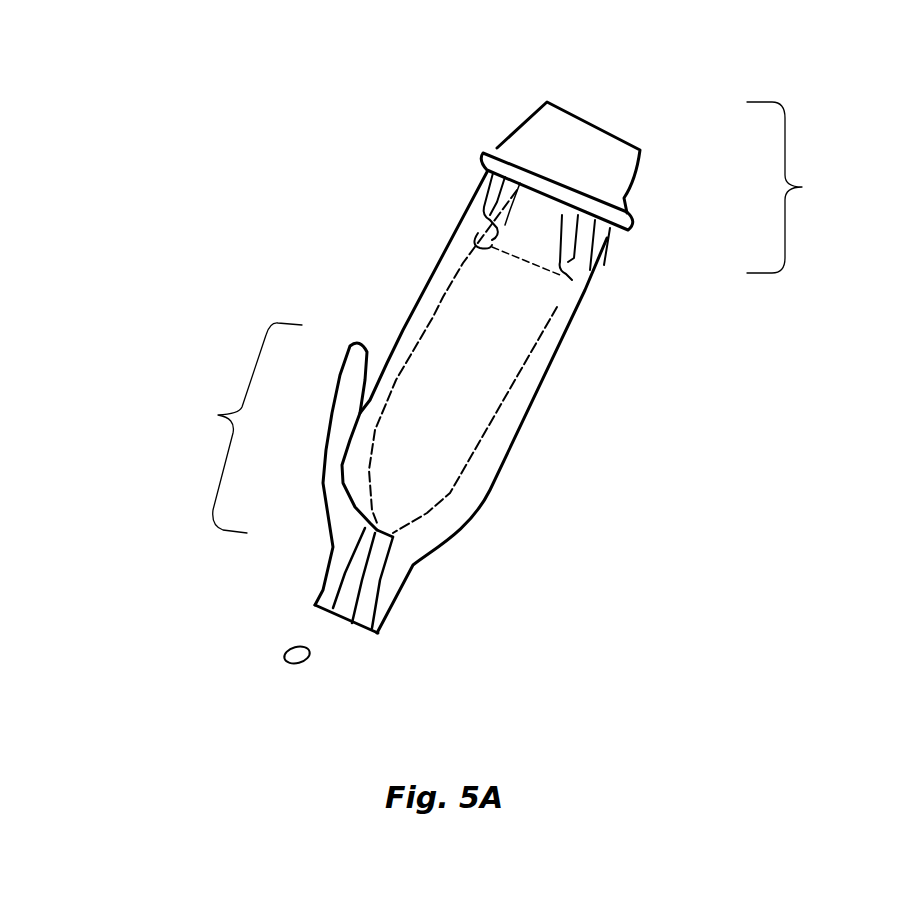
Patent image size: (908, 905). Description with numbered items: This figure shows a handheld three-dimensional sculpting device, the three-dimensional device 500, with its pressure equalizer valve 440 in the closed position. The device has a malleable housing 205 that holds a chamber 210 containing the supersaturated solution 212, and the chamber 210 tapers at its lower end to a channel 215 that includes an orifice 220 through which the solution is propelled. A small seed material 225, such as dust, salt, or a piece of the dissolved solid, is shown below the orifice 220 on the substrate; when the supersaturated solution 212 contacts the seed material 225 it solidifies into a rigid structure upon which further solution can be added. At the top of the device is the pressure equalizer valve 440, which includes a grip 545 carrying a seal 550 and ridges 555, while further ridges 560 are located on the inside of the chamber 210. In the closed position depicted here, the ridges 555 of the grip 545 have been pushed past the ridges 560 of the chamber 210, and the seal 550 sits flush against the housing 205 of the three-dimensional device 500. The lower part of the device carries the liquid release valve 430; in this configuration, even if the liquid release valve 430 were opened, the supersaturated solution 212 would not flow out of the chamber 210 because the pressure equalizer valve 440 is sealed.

The malleable housing 205 is at (503, 477).
The chamber 210 is at (418, 480).
The supersaturated solution 212 is at (463, 308).
The channel 215 is at (378, 565).
The orifice 220 is at (340, 622).
The seed material 225 is at (273, 652).
The liquid release valve 430 is at (219, 428).
The pressure equalizer valve 440 is at (817, 187).
The 3D device 500 is at (708, 593).
The grip 545 is at (593, 137).
The seal 550 is at (488, 150).
The ridges 555 is at (573, 287).
The ridges 560 is at (473, 213).